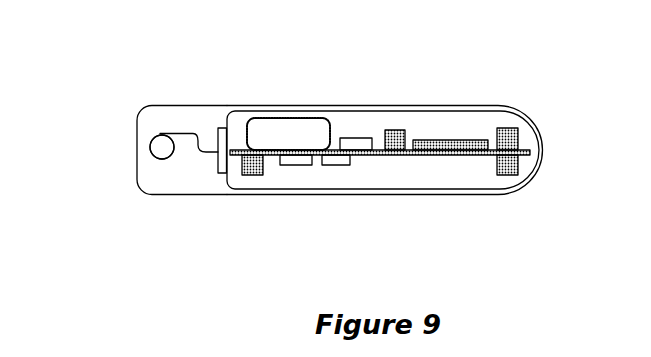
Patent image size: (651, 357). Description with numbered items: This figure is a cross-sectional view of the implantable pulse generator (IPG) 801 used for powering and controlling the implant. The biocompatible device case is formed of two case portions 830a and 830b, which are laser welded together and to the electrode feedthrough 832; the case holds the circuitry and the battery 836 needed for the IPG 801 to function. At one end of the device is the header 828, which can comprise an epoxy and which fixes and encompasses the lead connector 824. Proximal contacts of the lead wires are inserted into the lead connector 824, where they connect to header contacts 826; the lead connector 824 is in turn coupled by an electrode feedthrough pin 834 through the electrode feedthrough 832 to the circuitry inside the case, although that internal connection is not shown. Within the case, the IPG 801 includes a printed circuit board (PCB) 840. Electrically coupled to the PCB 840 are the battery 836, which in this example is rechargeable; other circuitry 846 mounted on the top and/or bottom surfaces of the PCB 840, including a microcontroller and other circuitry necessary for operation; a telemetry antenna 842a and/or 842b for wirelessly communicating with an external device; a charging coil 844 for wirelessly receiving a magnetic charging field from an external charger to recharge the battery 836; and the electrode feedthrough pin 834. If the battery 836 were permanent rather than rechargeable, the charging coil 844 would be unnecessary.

The implantable pulse generator 801 is at (205, 50).
The lead connector 824 is at (153, 137).
The header contacts 826 is at (114, 145).
The header 828 is at (178, 106).
The case portion 830a is at (530, 113).
The case portion 830b is at (533, 183).
The electrode feedthrough 832 is at (222, 173).
The electrode feedthrough pin 834 is at (197, 128).
The battery 836 is at (288, 134).
The printed circuit board 840 is at (368, 154).
The telemetry antenna 842a is at (395, 130).
The telemetry antenna 842b is at (455, 140).
The charging coil 844 is at (248, 175).
The other circuitry 846 is at (366, 140).